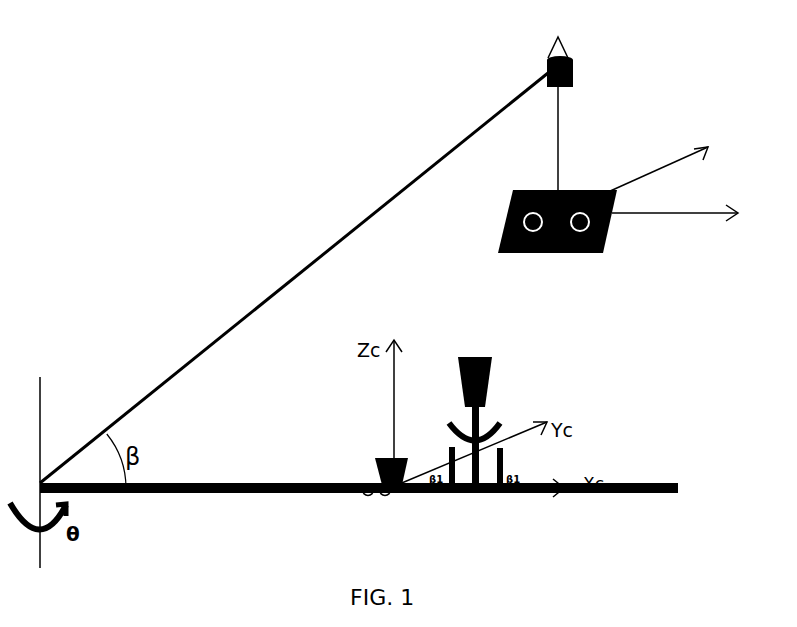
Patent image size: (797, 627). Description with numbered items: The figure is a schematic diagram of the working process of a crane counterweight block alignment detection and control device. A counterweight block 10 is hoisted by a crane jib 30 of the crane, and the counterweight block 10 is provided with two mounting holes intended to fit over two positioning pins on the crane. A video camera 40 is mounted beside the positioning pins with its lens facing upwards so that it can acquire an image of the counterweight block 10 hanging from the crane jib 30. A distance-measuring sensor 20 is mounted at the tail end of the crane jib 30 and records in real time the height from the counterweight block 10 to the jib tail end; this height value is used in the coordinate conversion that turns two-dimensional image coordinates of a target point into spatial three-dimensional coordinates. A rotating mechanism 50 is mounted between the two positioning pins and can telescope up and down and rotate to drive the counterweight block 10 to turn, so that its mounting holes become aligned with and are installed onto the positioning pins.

The counterweight block 10 is at (587, 255).
The distance-measuring sensor 20 is at (576, 58).
The crane jib 30 is at (407, 182).
The video camera 40 is at (358, 473).
The rotating mechanism 50 is at (481, 418).